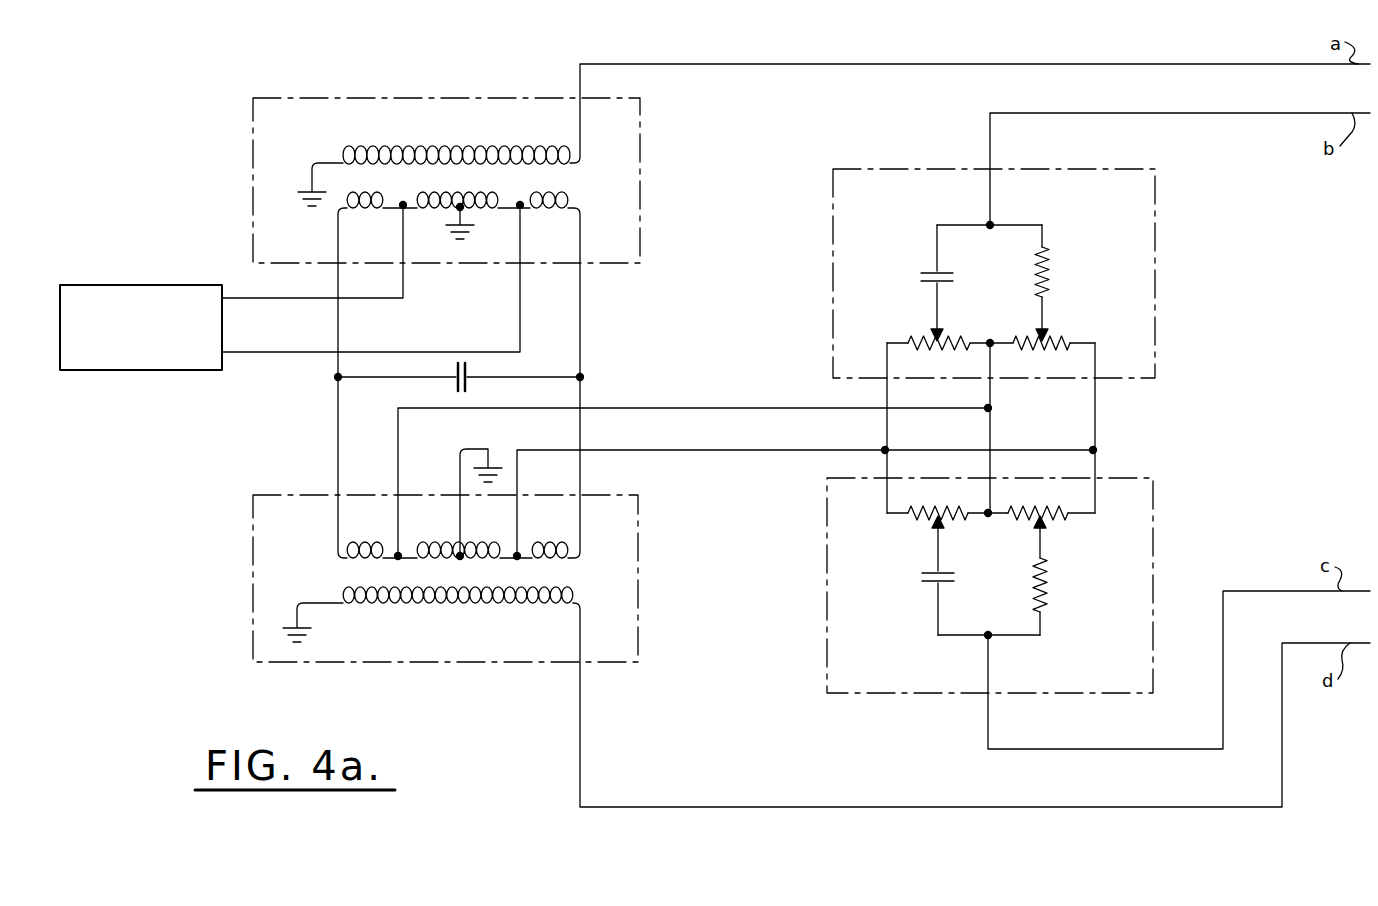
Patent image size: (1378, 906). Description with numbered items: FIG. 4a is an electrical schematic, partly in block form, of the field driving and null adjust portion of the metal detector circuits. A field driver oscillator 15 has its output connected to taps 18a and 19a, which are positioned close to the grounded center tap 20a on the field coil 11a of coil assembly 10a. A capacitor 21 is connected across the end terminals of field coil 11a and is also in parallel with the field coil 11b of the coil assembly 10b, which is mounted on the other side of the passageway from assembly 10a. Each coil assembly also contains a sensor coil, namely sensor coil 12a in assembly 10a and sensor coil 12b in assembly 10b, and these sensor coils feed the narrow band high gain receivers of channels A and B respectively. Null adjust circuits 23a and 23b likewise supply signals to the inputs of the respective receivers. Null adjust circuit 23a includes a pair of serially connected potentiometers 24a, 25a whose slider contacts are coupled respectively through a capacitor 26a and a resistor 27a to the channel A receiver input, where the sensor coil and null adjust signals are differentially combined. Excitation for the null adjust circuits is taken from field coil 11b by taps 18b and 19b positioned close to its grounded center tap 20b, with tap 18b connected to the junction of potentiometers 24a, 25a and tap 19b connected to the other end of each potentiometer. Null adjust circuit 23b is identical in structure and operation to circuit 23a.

The coil assembly 10a is at (410, 94).
The sensor coil 12a is at (456, 158).
The field coil 11a is at (556, 203).
The tap 18a is at (401, 207).
The grounded center tap 20a is at (458, 209).
The tap 19a is at (521, 208).
The field driver oscillator 15 is at (142, 285).
The capacitor 21 is at (470, 383).
The coil assembly 10b is at (240, 582).
The field coil 11b is at (338, 553).
The tap 18b is at (397, 553).
The grounded center tap 20b is at (459, 553).
The tap 19b is at (519, 554).
The sensor coil 12b is at (482, 604).
The null adjust circuit 23a is at (1165, 240).
The capacitor 26a is at (934, 270).
The resistor 27a is at (1050, 268).
The potentiometer 24a is at (912, 338).
The potentiometer 25a is at (1066, 339).
The null adjust circuit 23b is at (1165, 503).